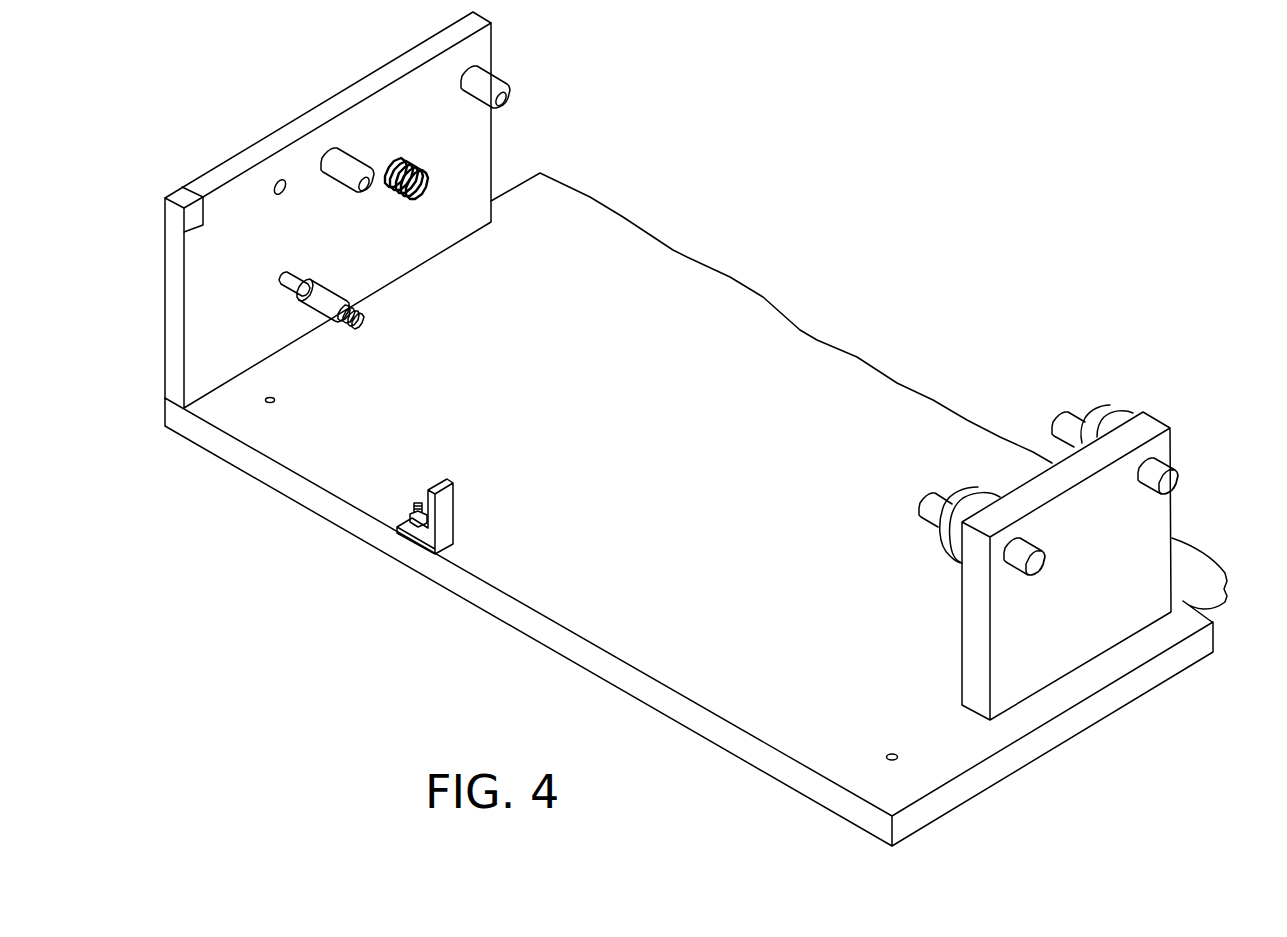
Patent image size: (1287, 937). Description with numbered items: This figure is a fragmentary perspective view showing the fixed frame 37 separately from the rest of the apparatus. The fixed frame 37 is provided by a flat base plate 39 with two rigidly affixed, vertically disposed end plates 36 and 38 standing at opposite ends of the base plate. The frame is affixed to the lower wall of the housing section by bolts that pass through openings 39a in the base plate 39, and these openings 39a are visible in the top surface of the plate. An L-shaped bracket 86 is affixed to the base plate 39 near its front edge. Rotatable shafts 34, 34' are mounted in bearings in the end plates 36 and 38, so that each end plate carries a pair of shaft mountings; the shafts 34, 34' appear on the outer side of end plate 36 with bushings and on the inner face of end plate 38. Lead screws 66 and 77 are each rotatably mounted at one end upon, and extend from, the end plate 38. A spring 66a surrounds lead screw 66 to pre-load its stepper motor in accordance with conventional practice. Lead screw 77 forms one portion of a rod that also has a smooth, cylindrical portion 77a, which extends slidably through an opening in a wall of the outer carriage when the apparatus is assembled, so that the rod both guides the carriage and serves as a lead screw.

The rotatable shaft 34 is at (768, 256).
The rotatable shaft 34' is at (660, 355).
The end plate 36 is at (1152, 522).
The fixed frame 37 is at (432, 590).
The end plate 38 is at (475, 153).
The base plate 39 is at (808, 368).
The openings 39a is at (273, 408).
The lead screw 66 is at (423, 197).
The spring 66a is at (408, 200).
The lead screw 77 is at (347, 325).
The smooth cylindrical portion 77a is at (320, 304).
The L-shaped bracket 86 is at (443, 510).